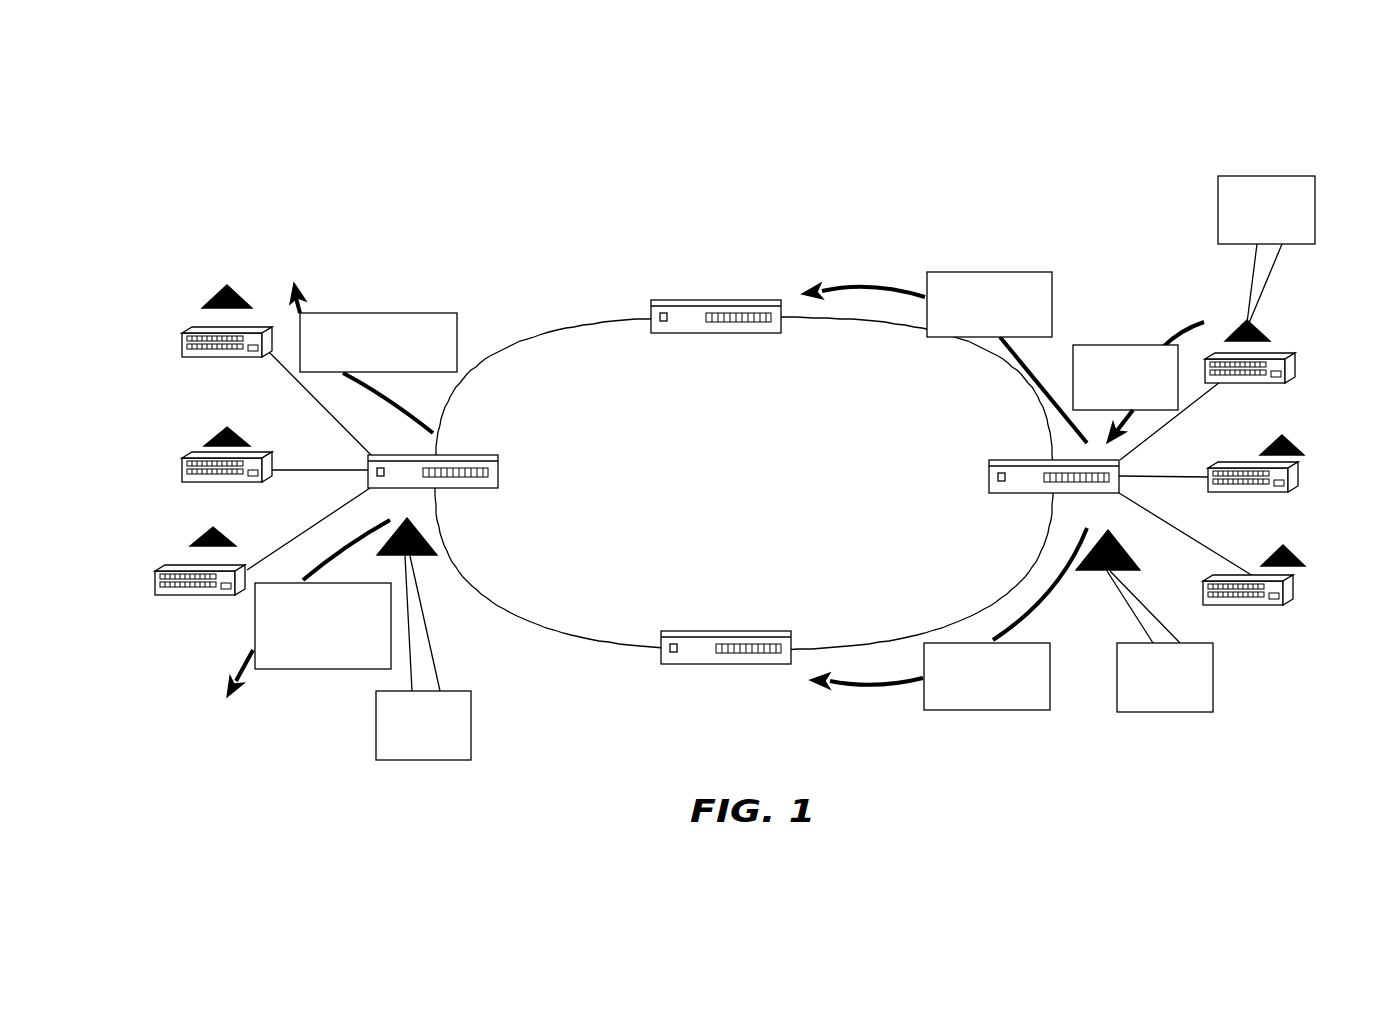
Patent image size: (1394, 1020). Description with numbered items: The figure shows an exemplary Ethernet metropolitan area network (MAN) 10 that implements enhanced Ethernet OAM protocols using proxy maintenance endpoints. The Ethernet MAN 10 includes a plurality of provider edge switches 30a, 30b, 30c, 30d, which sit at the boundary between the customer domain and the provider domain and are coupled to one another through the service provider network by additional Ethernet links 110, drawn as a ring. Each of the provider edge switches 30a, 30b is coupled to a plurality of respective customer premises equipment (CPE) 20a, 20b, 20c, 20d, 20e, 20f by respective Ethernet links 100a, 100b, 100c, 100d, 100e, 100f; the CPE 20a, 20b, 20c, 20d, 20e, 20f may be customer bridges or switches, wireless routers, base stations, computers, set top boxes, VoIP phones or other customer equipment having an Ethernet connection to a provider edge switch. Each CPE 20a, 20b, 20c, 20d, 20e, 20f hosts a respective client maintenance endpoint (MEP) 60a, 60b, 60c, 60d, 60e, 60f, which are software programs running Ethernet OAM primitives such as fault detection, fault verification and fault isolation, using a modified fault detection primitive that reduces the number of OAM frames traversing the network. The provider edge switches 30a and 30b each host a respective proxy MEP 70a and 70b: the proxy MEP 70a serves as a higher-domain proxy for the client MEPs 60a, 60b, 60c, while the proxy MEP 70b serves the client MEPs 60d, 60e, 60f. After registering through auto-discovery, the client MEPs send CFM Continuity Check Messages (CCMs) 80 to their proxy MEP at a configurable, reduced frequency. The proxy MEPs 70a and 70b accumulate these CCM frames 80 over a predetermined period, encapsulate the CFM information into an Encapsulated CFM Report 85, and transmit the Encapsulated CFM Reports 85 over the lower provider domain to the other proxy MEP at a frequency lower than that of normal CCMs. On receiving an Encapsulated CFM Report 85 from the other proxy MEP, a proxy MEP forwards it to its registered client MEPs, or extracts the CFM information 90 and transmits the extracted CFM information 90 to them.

The Ethernet metropolitan area network (MAN) 10 is at (1290, 126).
The customer premises equipment (CPE) 20a is at (181, 344).
The customer premises equipment (CPE) 20b is at (181, 472).
The customer premises equipment (CPE) 20c is at (154, 584).
The customer premises equipment (CPE) 20d is at (1296, 365).
The customer premises equipment (CPE) 20e is at (1299, 473).
The customer premises equipment (CPE) 20f is at (1294, 587).
The provider edge switch 30a is at (498, 471).
The provider edge switch 30b is at (988, 474).
The provider edge switch 30c is at (718, 299).
The provider edge switch 30d is at (727, 630).
The client maintenance endpoint (MEP) 60a is at (214, 301).
The client maintenance endpoint (MEP) 60b is at (214, 441).
The client maintenance endpoint (MEP) 60c is at (202, 538).
The client maintenance endpoint (MEP) 60d is at (1263, 336).
The client maintenance endpoint (MEP) 60e is at (1300, 449).
The client maintenance endpoint (MEP) 60f is at (1301, 560).
The proxy MEP 70a is at (422, 556).
The proxy MEP 70b is at (1090, 571).
The CFM Continuity Check Message (CCM) 80 is at (1127, 344).
The Encapsulated CFM Report 85 is at (990, 272).
The CFM information 90 is at (380, 313).
The Ethernet link 100a is at (304, 385).
The Ethernet link 100b is at (319, 468).
The Ethernet link 100c is at (287, 543).
The Ethernet link 100d is at (1179, 414).
The Ethernet link 100e is at (1152, 476).
The Ethernet link 100f is at (1188, 539).
The Ethernet links 110 is at (556, 322).